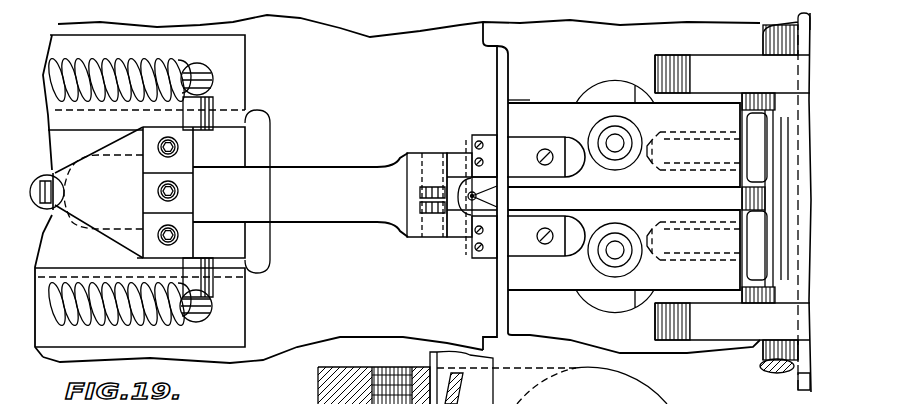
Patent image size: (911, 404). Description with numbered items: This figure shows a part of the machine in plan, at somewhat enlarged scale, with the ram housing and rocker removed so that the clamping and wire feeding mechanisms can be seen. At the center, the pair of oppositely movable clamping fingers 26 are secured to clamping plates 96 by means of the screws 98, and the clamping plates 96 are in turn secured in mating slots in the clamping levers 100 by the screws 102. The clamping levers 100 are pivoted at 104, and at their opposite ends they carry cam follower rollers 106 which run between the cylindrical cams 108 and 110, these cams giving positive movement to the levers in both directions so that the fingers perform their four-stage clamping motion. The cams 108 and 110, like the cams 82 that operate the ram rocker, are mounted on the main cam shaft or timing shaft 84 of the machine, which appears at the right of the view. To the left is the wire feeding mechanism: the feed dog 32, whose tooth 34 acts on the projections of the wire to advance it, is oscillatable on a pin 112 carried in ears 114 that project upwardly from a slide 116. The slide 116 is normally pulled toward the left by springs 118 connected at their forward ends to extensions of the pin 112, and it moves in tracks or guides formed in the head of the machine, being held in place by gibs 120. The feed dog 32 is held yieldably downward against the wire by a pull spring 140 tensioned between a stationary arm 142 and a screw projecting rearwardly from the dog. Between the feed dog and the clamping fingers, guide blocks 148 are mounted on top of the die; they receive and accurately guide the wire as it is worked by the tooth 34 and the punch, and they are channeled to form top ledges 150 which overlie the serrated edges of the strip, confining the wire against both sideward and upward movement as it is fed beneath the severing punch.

The clamping fingers 26 is at (487, 196).
The feed dog 32 is at (318, 178).
The tooth 34 is at (440, 190).
The cams 82 is at (716, 68).
The main timing shaft 84 is at (800, 381).
The clamping plates 96 is at (513, 147).
The screws 98 is at (468, 150).
The clamping levers 100 is at (592, 108).
The screws 102 is at (546, 150).
The pivot 104 is at (618, 142).
The cam follower rollers 106 is at (752, 126).
The cylindrical cam 108 is at (742, 197).
The cylindrical cam 110 is at (740, 105).
The pin 112 is at (204, 110).
The ears 114 is at (232, 146).
The slide 116 is at (55, 232).
The springs 118 is at (130, 54).
The gibs 120 is at (237, 52).
The pull spring 140 is at (38, 176).
The stationary arm 142 is at (100, 153).
The guide blocks 148 is at (458, 160).
The top ledges 150 is at (424, 189).